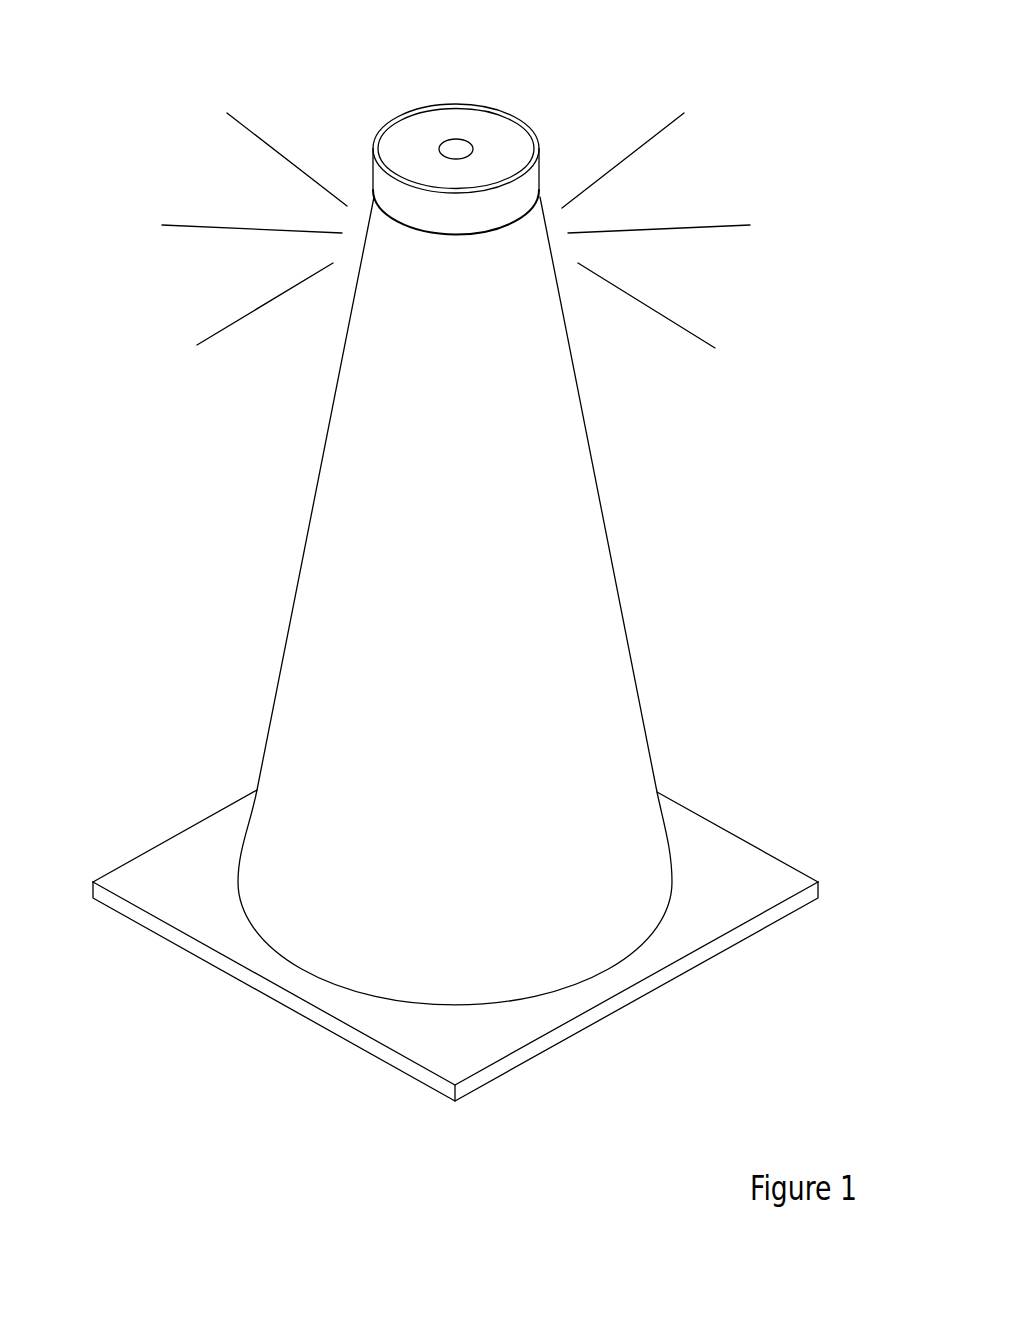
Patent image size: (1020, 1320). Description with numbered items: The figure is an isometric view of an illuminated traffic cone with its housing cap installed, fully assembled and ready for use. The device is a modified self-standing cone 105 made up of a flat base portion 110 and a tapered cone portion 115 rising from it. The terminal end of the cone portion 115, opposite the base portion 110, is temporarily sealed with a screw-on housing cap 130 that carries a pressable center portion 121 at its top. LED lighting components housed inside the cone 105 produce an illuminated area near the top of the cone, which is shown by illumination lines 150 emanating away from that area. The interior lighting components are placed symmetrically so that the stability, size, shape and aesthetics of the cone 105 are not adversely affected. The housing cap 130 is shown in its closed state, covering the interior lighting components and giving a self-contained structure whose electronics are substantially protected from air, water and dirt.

The self-standing cone 105 is at (439, 566).
The base portion 110 is at (187, 939).
The cone portion 115 is at (318, 512).
The pressable center portion 121 is at (452, 142).
The housing cap 130 is at (518, 133).
The illumination lines 150 is at (236, 322).